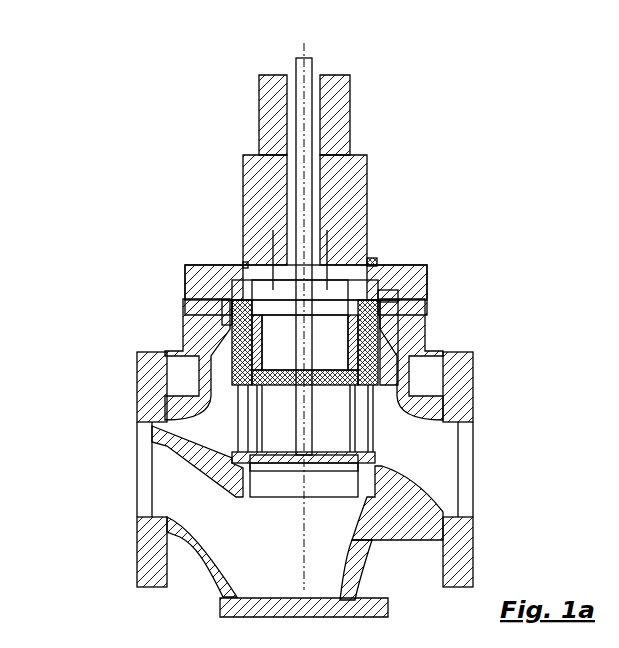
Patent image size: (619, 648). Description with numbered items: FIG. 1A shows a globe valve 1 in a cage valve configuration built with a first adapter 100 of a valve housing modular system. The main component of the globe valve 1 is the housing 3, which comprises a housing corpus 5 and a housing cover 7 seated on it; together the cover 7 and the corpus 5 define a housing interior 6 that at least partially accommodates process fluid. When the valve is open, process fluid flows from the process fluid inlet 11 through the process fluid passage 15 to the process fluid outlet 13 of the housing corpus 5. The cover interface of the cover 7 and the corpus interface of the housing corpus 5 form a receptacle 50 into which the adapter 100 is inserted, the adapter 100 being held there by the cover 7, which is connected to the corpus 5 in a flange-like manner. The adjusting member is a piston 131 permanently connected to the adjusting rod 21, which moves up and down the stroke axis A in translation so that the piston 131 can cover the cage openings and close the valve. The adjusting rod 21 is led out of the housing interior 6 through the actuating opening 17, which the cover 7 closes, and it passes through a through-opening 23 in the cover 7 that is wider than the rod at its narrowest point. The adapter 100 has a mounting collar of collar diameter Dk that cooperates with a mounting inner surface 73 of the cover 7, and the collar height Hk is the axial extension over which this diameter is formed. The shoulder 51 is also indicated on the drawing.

The globe valve 1 is at (520, 137).
The housing 3 is at (500, 250).
The housing corpus 5 is at (420, 316).
The housing interior 6 is at (217, 358).
The housing cover 7 is at (405, 296).
The process fluid inlet 11 is at (140, 462).
The process fluid outlet 13 is at (463, 481).
The process fluid passage 15 is at (313, 478).
The actuating opening 17 is at (261, 290).
The adjusting rod 21 is at (325, 167).
The through-opening 23 is at (318, 126).
The receptacle 50 is at (237, 310).
The flange shoulder 51 is at (378, 308).
The mounting inner surface 73 is at (360, 285).
The adapter 100 is at (225, 371).
The piston 131 is at (370, 343).
The stroke axis A is at (300, 112).
The collar diameter Dk is at (70, 637).
The collar height Hk is at (183, 647).